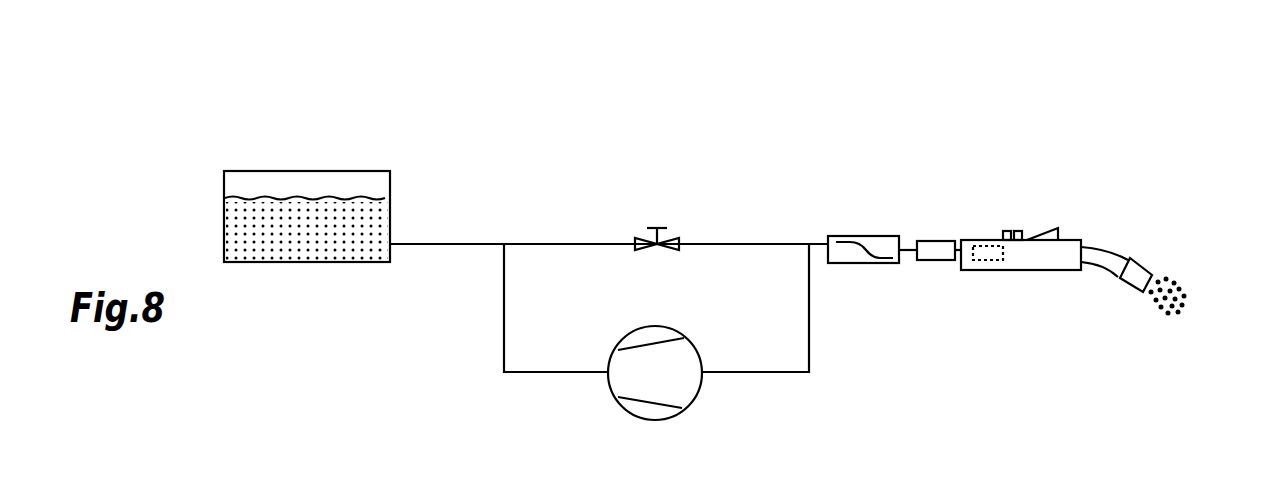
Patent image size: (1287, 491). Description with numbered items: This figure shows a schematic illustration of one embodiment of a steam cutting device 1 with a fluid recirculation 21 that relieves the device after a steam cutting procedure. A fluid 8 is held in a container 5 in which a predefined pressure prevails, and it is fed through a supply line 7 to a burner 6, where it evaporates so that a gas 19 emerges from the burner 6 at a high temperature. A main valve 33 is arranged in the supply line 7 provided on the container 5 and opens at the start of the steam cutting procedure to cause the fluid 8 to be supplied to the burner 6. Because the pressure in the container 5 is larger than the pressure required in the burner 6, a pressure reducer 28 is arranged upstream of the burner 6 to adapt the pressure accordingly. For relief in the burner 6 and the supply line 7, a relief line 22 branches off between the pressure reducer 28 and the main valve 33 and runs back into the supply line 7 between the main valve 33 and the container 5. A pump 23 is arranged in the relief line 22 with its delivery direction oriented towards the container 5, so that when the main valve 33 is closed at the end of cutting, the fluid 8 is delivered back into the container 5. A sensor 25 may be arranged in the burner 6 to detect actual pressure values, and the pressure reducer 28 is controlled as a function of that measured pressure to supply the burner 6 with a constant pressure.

The steam cutting device 1 is at (368, 107).
The fluid recirculation 21 is at (190, 133).
The container 5 is at (245, 290).
The fluid 8 is at (303, 218).
The supply line 7 is at (462, 246).
The relief line 22 is at (772, 380).
The pump 23 is at (652, 374).
The main valve 33 is at (618, 218).
The pressure reducer 28 is at (859, 208).
The burner 6 is at (968, 291).
The sensor 25 is at (995, 262).
The gas 19 is at (1190, 271).